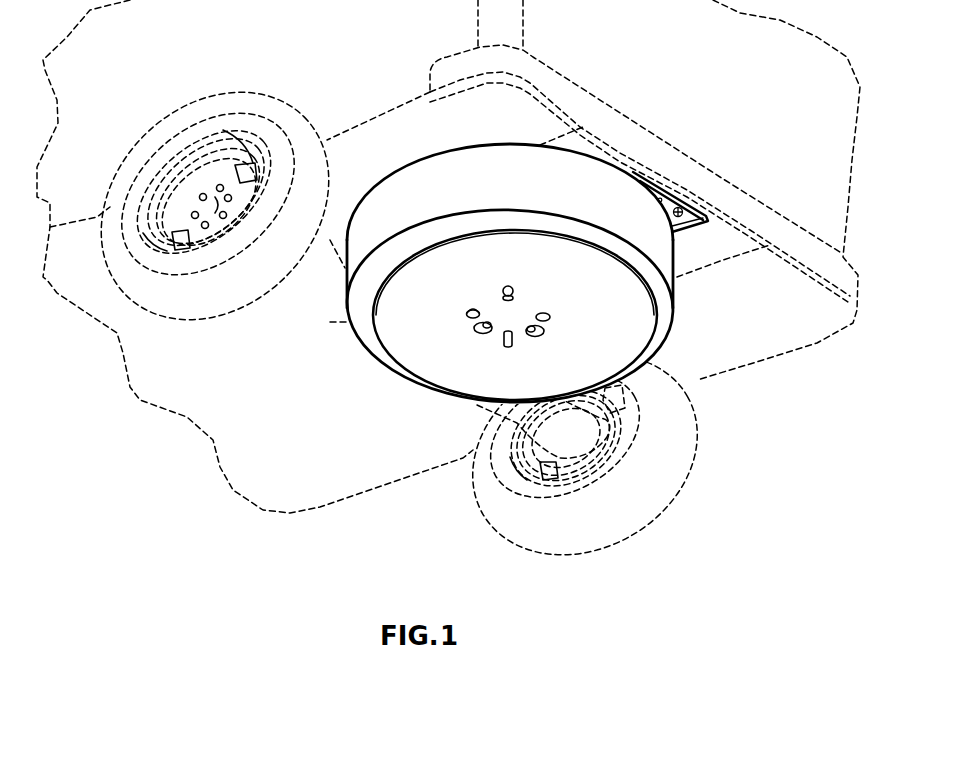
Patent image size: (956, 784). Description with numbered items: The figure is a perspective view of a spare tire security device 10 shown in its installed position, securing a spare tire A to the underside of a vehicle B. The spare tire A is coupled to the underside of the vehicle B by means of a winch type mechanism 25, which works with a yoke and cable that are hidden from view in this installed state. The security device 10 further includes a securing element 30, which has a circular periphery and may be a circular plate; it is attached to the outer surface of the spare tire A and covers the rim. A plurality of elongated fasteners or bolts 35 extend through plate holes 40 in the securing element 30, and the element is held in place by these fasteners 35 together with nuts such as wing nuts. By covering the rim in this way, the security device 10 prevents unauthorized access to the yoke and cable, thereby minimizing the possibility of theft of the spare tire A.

The spare tire security device 10 is at (252, 447).
The spare tire A is at (427, 197).
The vehicle B is at (729, 352).
The winch type mechanism 25 is at (700, 232).
The securing element 30 is at (423, 348).
The fasteners 35 is at (513, 290).
The plate holes 40 is at (471, 311).